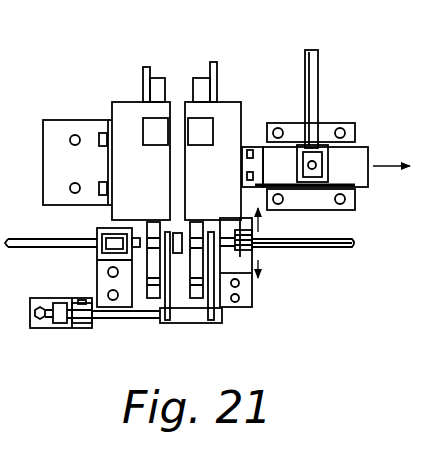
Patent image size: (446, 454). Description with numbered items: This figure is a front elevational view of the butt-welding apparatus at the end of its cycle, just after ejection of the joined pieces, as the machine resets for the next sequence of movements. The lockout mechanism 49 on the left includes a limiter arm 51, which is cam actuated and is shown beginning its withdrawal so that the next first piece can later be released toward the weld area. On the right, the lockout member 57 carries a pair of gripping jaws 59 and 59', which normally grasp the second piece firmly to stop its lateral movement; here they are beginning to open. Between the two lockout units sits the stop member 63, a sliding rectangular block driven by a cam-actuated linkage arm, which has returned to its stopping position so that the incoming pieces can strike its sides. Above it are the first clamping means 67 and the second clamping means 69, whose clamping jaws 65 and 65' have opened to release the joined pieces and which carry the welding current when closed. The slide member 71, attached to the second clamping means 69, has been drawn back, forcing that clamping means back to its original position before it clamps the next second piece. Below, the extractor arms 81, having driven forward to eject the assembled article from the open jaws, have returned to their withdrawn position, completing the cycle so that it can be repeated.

The lockout mechanism 49 is at (83, 271).
The limiter arm 51 is at (137, 236).
The lockout member 57 is at (272, 278).
The gripping jaw 59 is at (287, 232).
The gripping jaw 59' is at (302, 256).
The stop member 63 is at (175, 228).
The clamping jaw 65 is at (144, 291).
The clamping jaw 65' is at (200, 291).
The first clamping means 67 is at (100, 100).
The second clamping means 69 is at (272, 73).
The slide member 71 is at (355, 108).
The extractor arms 81 is at (222, 313).